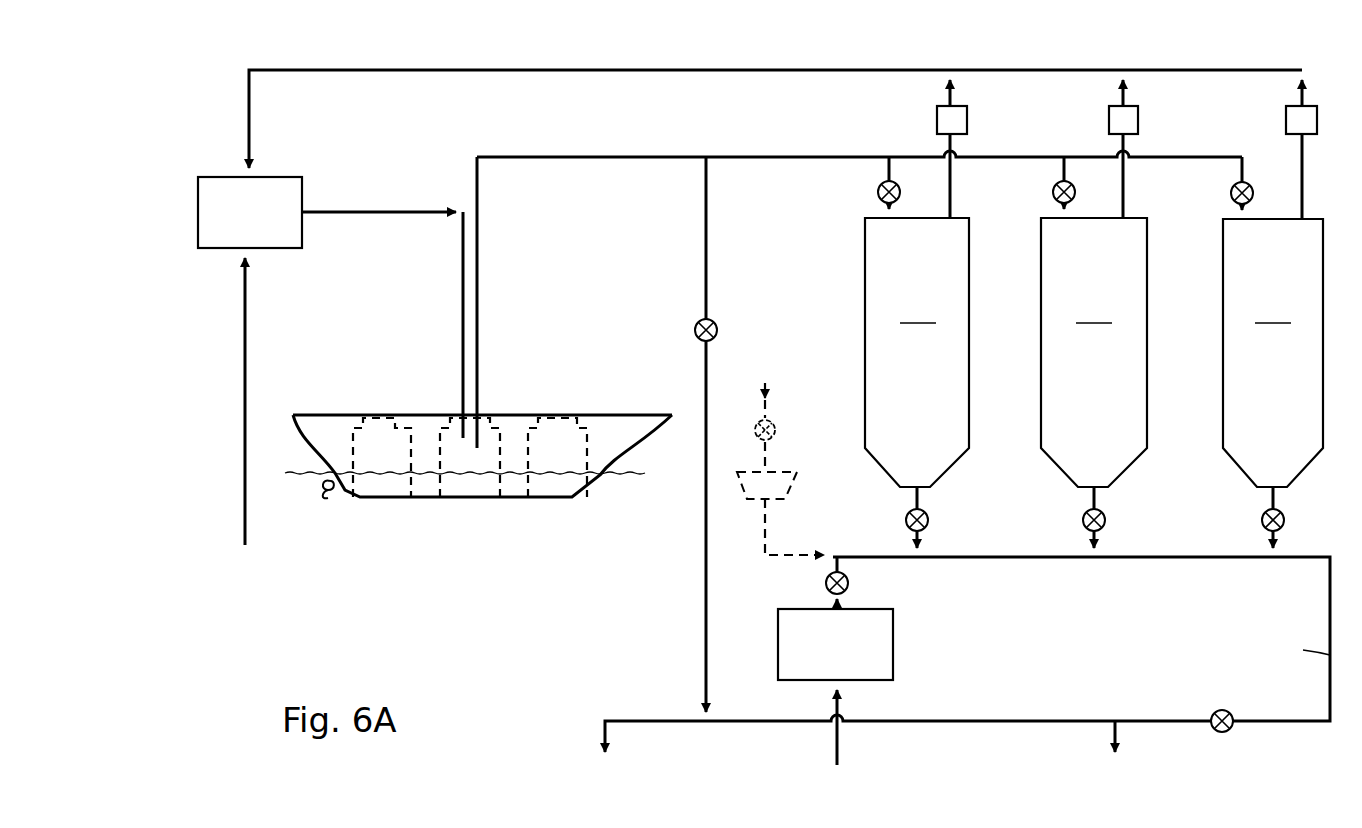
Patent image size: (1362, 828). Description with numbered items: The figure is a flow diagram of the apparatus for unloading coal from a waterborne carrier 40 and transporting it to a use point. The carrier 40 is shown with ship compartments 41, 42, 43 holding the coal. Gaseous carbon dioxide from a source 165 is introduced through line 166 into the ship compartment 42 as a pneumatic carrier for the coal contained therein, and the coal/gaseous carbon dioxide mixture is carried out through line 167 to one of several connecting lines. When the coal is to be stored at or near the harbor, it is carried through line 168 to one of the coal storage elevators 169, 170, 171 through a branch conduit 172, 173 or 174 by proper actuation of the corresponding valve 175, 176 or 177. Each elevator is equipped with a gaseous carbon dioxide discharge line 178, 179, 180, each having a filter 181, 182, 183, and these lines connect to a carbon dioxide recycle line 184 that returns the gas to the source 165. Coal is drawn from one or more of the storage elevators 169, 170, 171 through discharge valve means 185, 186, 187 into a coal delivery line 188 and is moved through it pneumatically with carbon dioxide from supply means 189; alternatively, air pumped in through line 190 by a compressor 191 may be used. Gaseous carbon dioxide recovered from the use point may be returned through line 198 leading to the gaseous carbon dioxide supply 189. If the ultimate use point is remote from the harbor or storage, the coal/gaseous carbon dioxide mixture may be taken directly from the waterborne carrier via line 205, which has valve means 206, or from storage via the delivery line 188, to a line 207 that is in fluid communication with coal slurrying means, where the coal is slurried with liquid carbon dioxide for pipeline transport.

The ship 40 is at (620, 423).
The coal hold 41 is at (388, 483).
The ship compartment 42 is at (472, 483).
The coal hold 43 is at (552, 483).
The source 165 is at (282, 177).
The line 166 is at (373, 210).
The line 167 is at (478, 305).
The line 168 is at (768, 157).
The coal storage elevator 169 is at (917, 352).
The coal storage elevator 170 is at (1094, 352).
The coal storage elevator 171 is at (1273, 353).
The branch conduit 172 is at (882, 205).
The branch conduit 173 is at (1057, 205).
The branch conduit 174 is at (1237, 208).
The valve 175 is at (878, 186).
The valve 176 is at (1053, 186).
The valve 177 is at (1232, 190).
The gaseous carbon dioxide discharge line 178 is at (953, 146).
The gaseous carbon dioxide discharge line 179 is at (1128, 147).
The gaseous carbon dioxide discharge line 180 is at (1305, 167).
The filter 181 is at (937, 120).
The filter 182 is at (1109, 122).
The filter 183 is at (1286, 122).
The carbon dioxide recycle line 184 is at (1012, 70).
The discharge valve means 185 is at (929, 520).
The discharge valve means 186 is at (1106, 520).
The discharge valve means 187 is at (1285, 520).
The coal delivery line 188 is at (1045, 558).
The supply means 189 is at (886, 632).
The line 190 is at (770, 527).
The compressor 191 is at (790, 488).
The line 198 is at (840, 745).
The line 205 is at (706, 552).
The valve means 206 is at (695, 331).
The line 207 is at (603, 730).